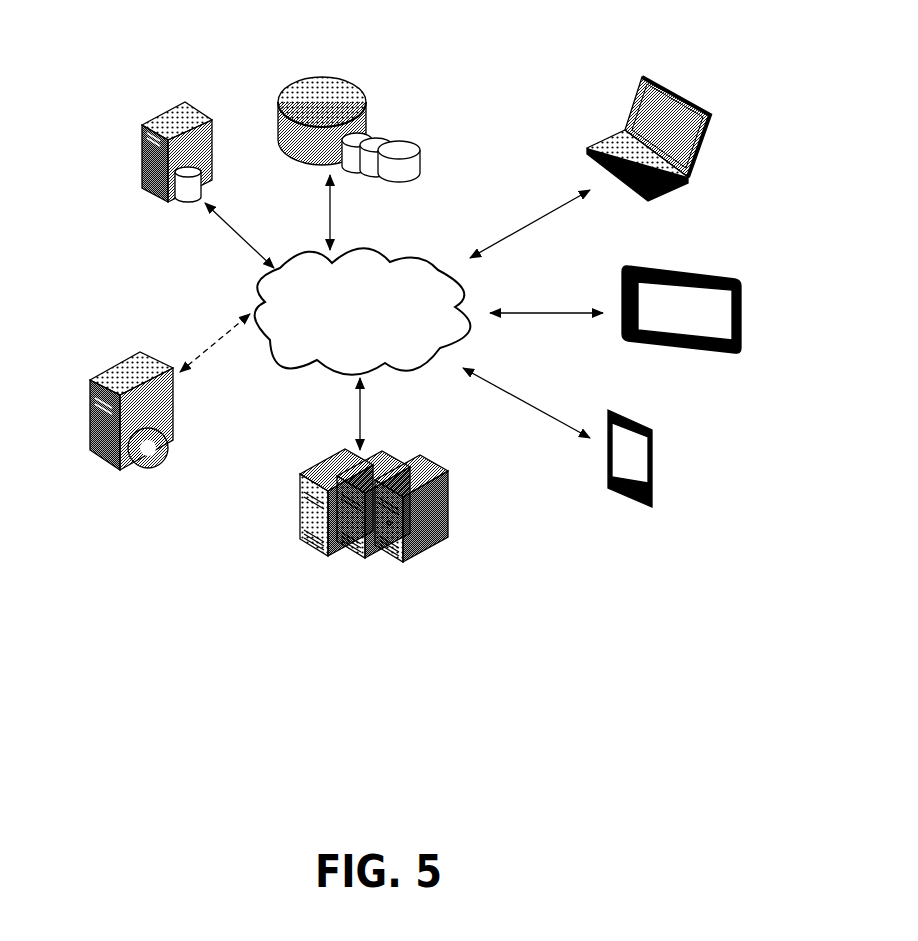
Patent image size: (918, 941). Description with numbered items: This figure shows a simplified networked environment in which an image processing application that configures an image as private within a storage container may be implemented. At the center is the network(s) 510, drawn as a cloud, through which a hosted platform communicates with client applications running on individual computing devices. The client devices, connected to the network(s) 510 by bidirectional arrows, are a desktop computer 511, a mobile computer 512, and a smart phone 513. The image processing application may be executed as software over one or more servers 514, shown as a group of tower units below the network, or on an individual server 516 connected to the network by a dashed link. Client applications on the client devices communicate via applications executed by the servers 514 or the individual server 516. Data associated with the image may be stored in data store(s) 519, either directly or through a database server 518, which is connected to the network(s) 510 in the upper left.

The network(s) 510 is at (365, 240).
The desktop computer 511 is at (683, 75).
The mobile computer 512 is at (716, 247).
The smart phone 513 is at (661, 427).
The servers 514 is at (328, 452).
The individual server 516 is at (110, 362).
The database server 518 is at (180, 212).
The data store(s) 519 is at (340, 53).